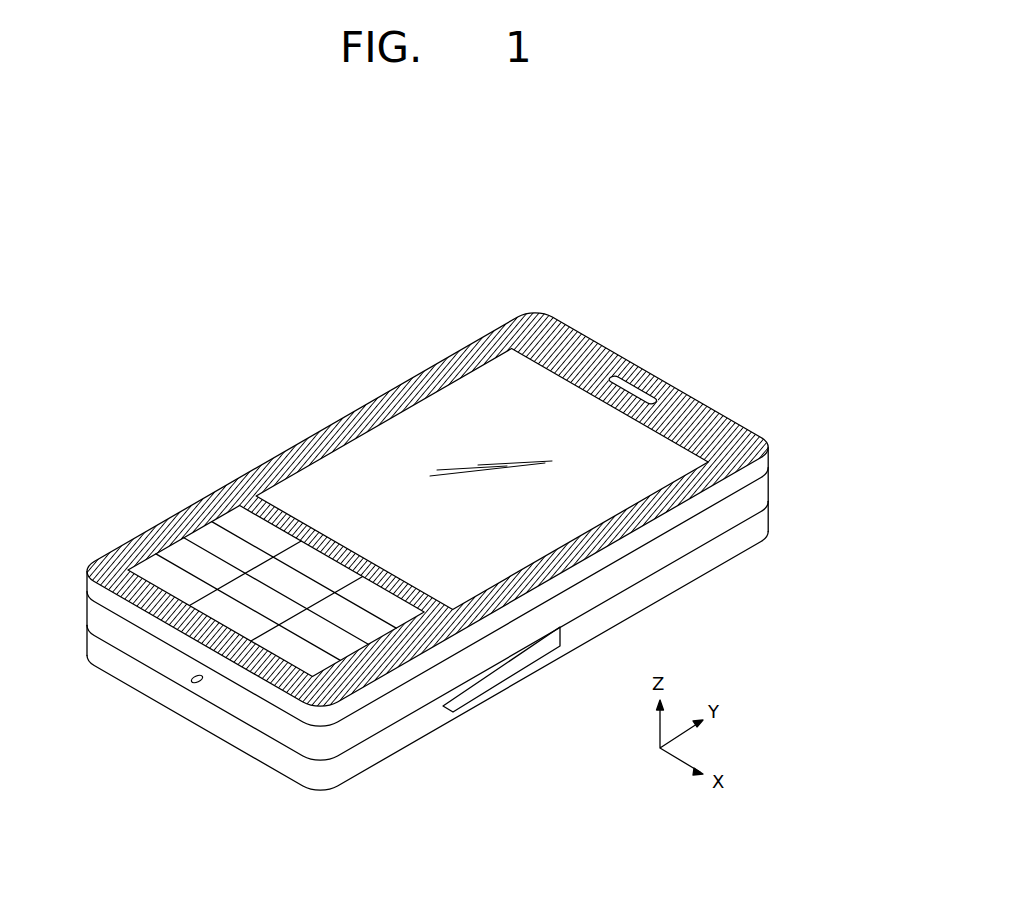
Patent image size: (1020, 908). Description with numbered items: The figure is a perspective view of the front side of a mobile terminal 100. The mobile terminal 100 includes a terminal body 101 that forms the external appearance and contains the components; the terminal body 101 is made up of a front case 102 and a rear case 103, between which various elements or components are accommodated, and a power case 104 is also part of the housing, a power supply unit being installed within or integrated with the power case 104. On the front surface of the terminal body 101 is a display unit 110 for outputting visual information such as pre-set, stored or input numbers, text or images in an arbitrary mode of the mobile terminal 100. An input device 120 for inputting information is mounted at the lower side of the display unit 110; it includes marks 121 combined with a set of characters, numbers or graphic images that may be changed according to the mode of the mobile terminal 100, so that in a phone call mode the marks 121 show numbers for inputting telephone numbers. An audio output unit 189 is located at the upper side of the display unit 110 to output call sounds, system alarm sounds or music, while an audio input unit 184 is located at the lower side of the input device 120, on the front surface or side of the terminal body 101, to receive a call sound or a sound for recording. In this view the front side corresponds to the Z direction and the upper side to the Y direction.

The mobile terminal 100 is at (762, 300).
The terminal body 101 is at (620, 350).
The front case 102 is at (757, 468).
The rear case 103 is at (757, 513).
The power case 104 is at (440, 702).
The display unit 110 is at (377, 460).
The input device 120 is at (205, 528).
The marks 121 is at (172, 553).
The audio input unit 184 is at (192, 683).
The audio output unit 189 is at (672, 378).